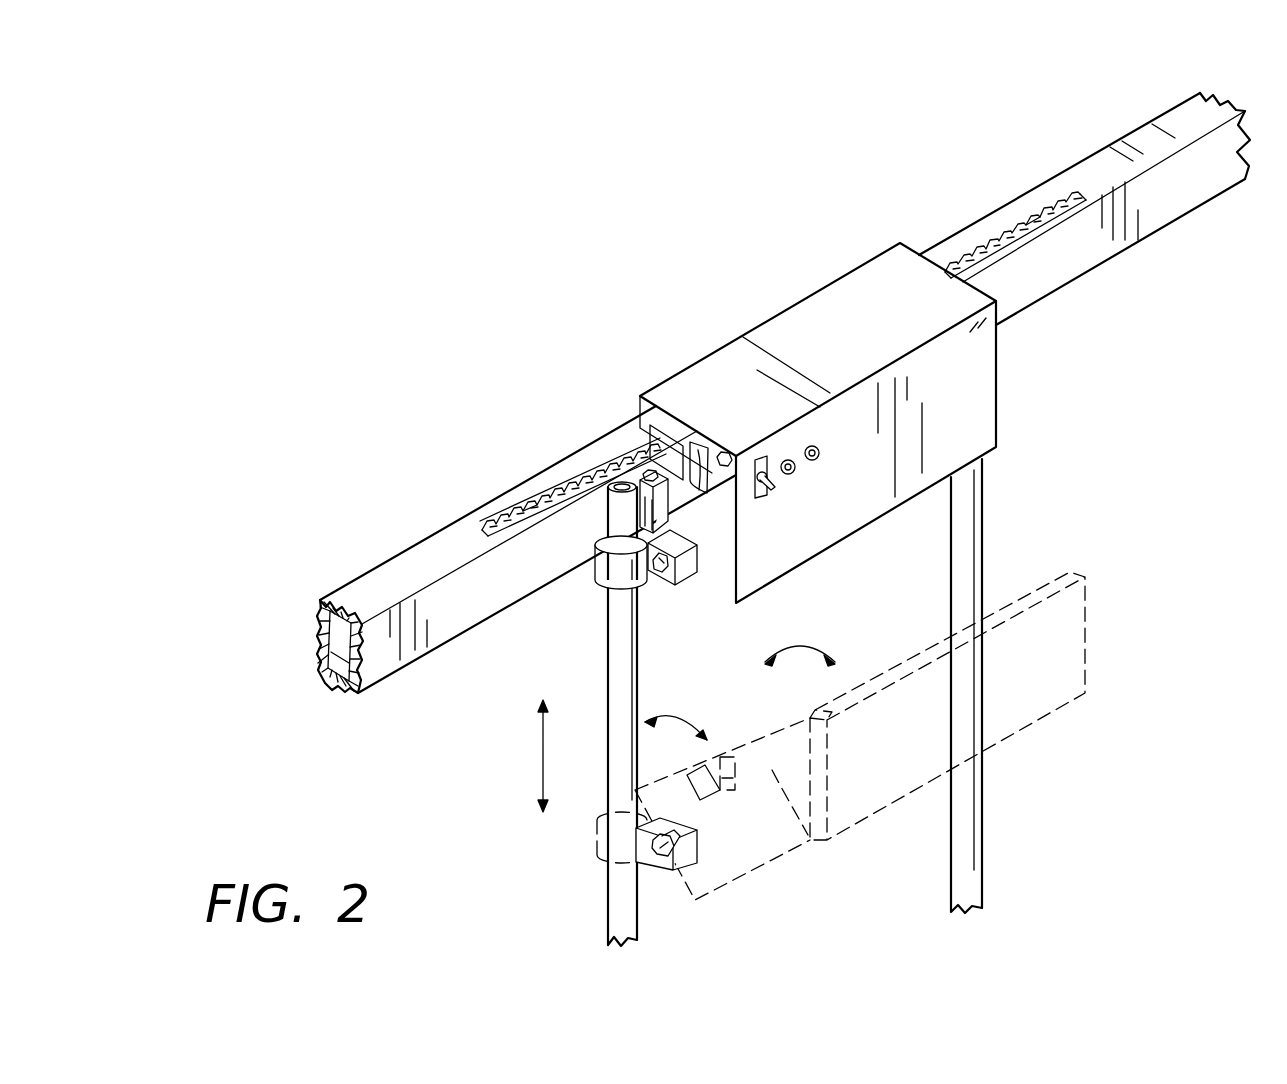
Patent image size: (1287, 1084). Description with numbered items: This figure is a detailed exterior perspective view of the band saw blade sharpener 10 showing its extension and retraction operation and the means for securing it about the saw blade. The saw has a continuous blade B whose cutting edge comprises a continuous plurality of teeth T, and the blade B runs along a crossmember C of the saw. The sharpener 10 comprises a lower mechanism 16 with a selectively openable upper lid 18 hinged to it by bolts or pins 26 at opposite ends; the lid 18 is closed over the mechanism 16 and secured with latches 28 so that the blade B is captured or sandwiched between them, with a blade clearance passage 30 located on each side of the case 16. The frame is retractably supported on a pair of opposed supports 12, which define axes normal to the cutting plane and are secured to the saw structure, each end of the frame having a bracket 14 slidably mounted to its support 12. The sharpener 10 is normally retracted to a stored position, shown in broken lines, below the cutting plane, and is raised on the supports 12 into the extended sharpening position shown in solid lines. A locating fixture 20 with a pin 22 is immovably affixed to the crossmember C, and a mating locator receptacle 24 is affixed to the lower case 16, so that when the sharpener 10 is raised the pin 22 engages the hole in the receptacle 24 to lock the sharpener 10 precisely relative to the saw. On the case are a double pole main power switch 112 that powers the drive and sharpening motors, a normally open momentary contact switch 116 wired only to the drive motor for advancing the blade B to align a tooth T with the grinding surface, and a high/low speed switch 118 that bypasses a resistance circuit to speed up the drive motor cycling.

The sharpener 10 is at (655, 275).
The support 12 is at (642, 660).
The bracket 14 is at (602, 582).
The lower mechanism 16 is at (863, 528).
The upper lid 18 is at (858, 266).
The locating fixture 20 is at (637, 470).
The pin 22 is at (668, 513).
The locator receptacle 24 is at (648, 540).
The bolts or pins 26 is at (728, 455).
The latches 28 is at (703, 440).
The blade clearance passage 30 is at (668, 428).
The double pole switch 112 is at (763, 498).
The momentary contact switch 116 is at (790, 475).
The high/low speed switch 118 is at (820, 453).
The blade B is at (480, 525).
The crossmember C is at (372, 571).
The teeth T is at (520, 525).